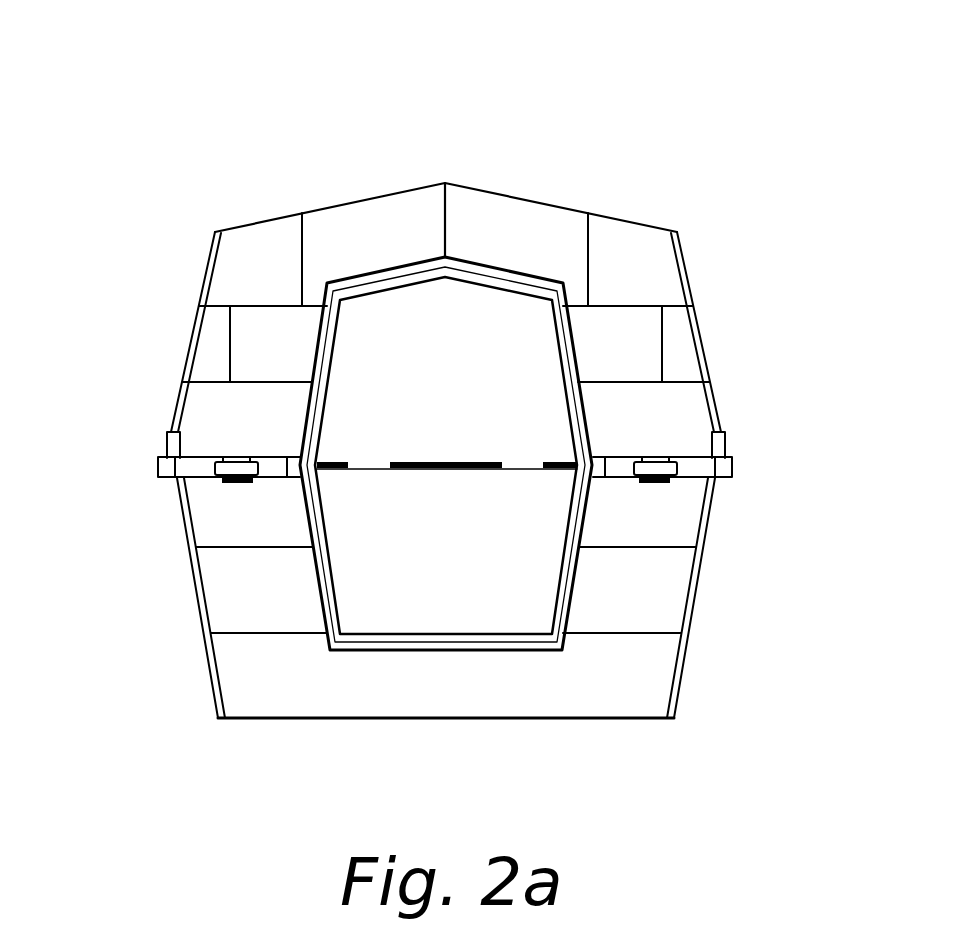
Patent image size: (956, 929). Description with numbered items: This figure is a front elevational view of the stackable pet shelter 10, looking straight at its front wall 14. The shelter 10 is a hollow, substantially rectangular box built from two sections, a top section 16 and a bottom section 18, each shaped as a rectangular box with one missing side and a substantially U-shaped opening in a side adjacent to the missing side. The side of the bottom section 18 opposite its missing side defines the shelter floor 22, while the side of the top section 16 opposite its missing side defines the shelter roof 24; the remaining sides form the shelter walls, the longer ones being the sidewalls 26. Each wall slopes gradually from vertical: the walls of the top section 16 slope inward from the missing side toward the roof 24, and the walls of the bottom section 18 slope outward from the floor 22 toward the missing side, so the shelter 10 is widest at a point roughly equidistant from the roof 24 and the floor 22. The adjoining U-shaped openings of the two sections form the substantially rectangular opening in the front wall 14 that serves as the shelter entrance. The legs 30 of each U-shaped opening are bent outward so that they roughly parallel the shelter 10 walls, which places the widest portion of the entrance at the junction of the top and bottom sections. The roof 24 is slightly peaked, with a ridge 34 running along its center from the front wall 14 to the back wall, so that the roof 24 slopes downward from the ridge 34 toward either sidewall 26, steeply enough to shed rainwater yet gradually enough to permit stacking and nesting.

The stackable pet shelter 10 is at (737, 92).
The front wall 14 is at (623, 583).
The top section 16 is at (255, 263).
The bottom section 18 is at (243, 608).
The shelter floor 22 is at (613, 720).
The shelter roof 24 is at (570, 203).
The sidewalls 26 is at (193, 342).
The legs 30 is at (335, 365).
The ridge 34 is at (445, 183).